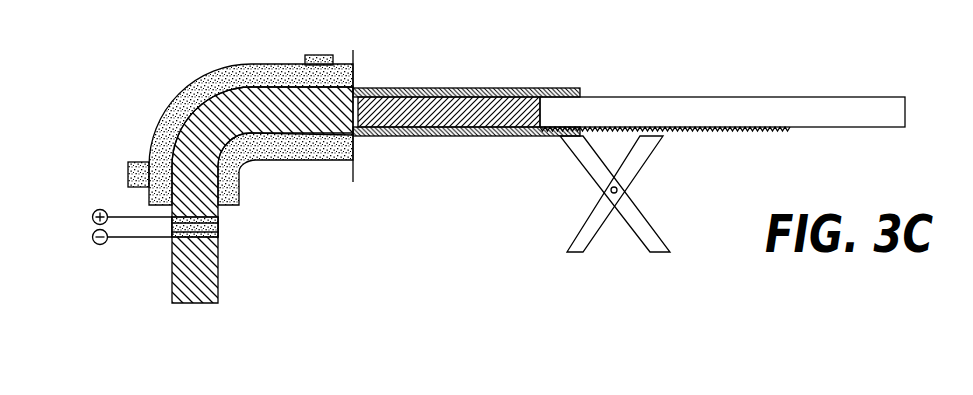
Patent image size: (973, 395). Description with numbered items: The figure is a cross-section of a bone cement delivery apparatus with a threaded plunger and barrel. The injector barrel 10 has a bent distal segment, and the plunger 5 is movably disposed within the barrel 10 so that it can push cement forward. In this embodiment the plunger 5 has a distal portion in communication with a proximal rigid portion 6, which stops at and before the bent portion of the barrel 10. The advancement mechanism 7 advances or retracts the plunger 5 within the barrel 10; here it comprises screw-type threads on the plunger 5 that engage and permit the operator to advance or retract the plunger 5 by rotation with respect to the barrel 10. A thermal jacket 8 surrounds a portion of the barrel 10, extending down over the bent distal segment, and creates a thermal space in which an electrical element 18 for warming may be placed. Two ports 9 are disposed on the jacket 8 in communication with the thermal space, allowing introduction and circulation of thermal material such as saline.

The plunger 5 is at (455, 88).
The proximal rigid portion 6 is at (689, 96).
The advancement mechanism 7 is at (637, 155).
The thermal jacket 8 is at (243, 66).
The port 9 is at (318, 55).
The injector barrel 10 is at (538, 88).
The electrical element 18 is at (218, 227).